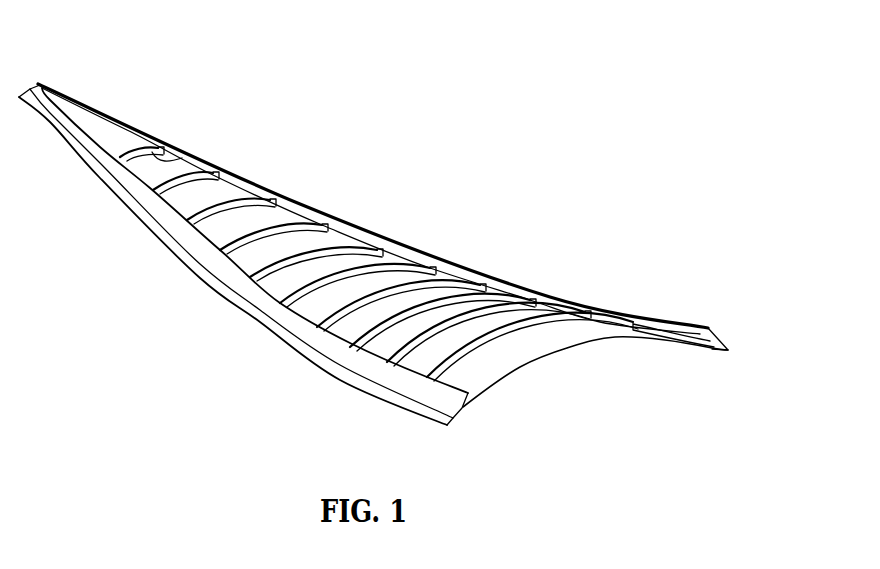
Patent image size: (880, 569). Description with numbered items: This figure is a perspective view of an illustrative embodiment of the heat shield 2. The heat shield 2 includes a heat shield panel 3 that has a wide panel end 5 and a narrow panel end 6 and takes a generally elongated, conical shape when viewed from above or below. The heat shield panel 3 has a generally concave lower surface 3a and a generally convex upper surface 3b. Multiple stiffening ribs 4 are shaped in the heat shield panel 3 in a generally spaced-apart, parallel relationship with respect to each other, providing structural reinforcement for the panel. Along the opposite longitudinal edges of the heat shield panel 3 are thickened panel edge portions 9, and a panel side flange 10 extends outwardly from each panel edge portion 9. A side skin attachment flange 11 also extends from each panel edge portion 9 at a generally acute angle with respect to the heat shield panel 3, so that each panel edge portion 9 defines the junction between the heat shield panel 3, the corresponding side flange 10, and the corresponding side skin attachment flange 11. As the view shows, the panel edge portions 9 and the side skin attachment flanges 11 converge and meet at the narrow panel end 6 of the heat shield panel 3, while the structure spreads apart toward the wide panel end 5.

The heat shield 2 is at (379, 257).
The heat shield panel 3 is at (531, 368).
The concave lower surface 3a is at (615, 338).
The convex upper surface 3b is at (573, 337).
The stiffening ribs 4 is at (208, 172).
The wide panel end 5 is at (477, 212).
The narrow panel end 6 is at (50, 88).
The thickened panel edge portions 9 is at (468, 415).
The panel side flange 10 is at (379, 277).
The side skin attachment flange 11 is at (363, 370).